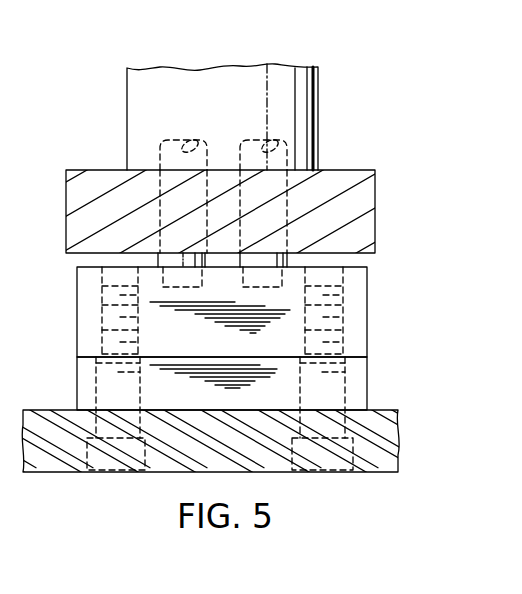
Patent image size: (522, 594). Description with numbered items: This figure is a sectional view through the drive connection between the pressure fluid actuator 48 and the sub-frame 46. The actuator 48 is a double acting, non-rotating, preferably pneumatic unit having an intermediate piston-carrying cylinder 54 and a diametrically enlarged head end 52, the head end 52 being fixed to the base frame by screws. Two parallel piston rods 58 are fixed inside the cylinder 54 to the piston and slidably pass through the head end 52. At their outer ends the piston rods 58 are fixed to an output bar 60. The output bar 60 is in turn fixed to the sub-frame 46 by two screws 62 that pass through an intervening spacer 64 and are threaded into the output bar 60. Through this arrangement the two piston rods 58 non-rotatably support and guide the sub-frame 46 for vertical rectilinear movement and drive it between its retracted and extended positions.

The sub-frame 46 is at (380, 432).
The double acting non-rotating pressure fluid actuator 48 is at (128, 86).
The head end 52 is at (360, 212).
The cylinder 54 is at (300, 84).
The piston rods 58 is at (158, 262).
The output bar 60 is at (352, 302).
The screws 62 is at (114, 457).
The spacer 64 is at (350, 382).